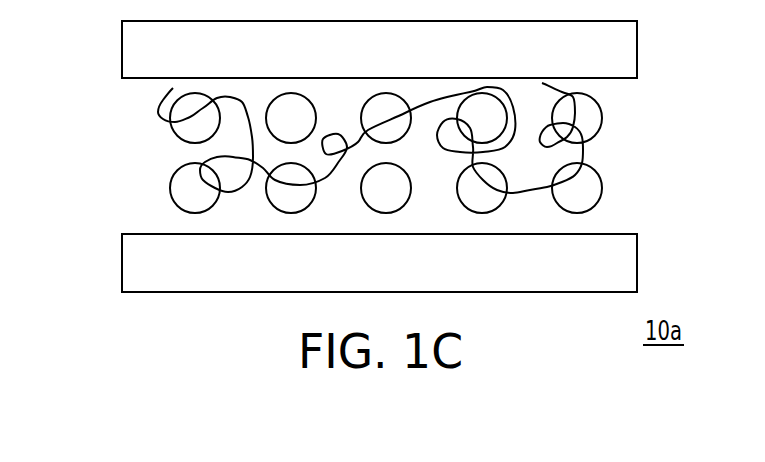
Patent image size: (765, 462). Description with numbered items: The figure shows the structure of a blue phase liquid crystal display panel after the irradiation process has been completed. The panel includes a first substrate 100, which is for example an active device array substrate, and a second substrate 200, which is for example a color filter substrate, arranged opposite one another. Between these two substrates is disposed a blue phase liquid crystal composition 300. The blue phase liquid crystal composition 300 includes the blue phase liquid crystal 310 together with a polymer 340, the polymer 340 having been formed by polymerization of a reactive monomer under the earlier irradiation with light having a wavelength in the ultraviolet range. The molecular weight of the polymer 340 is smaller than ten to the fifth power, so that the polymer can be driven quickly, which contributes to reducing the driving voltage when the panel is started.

The first substrate 100 is at (137, 267).
The second substrate 200 is at (137, 48).
The blue phase liquid crystal composition 300 is at (112, 78).
The blue phase liquid crystal 310 is at (592, 117).
The polymer 340 is at (583, 152).